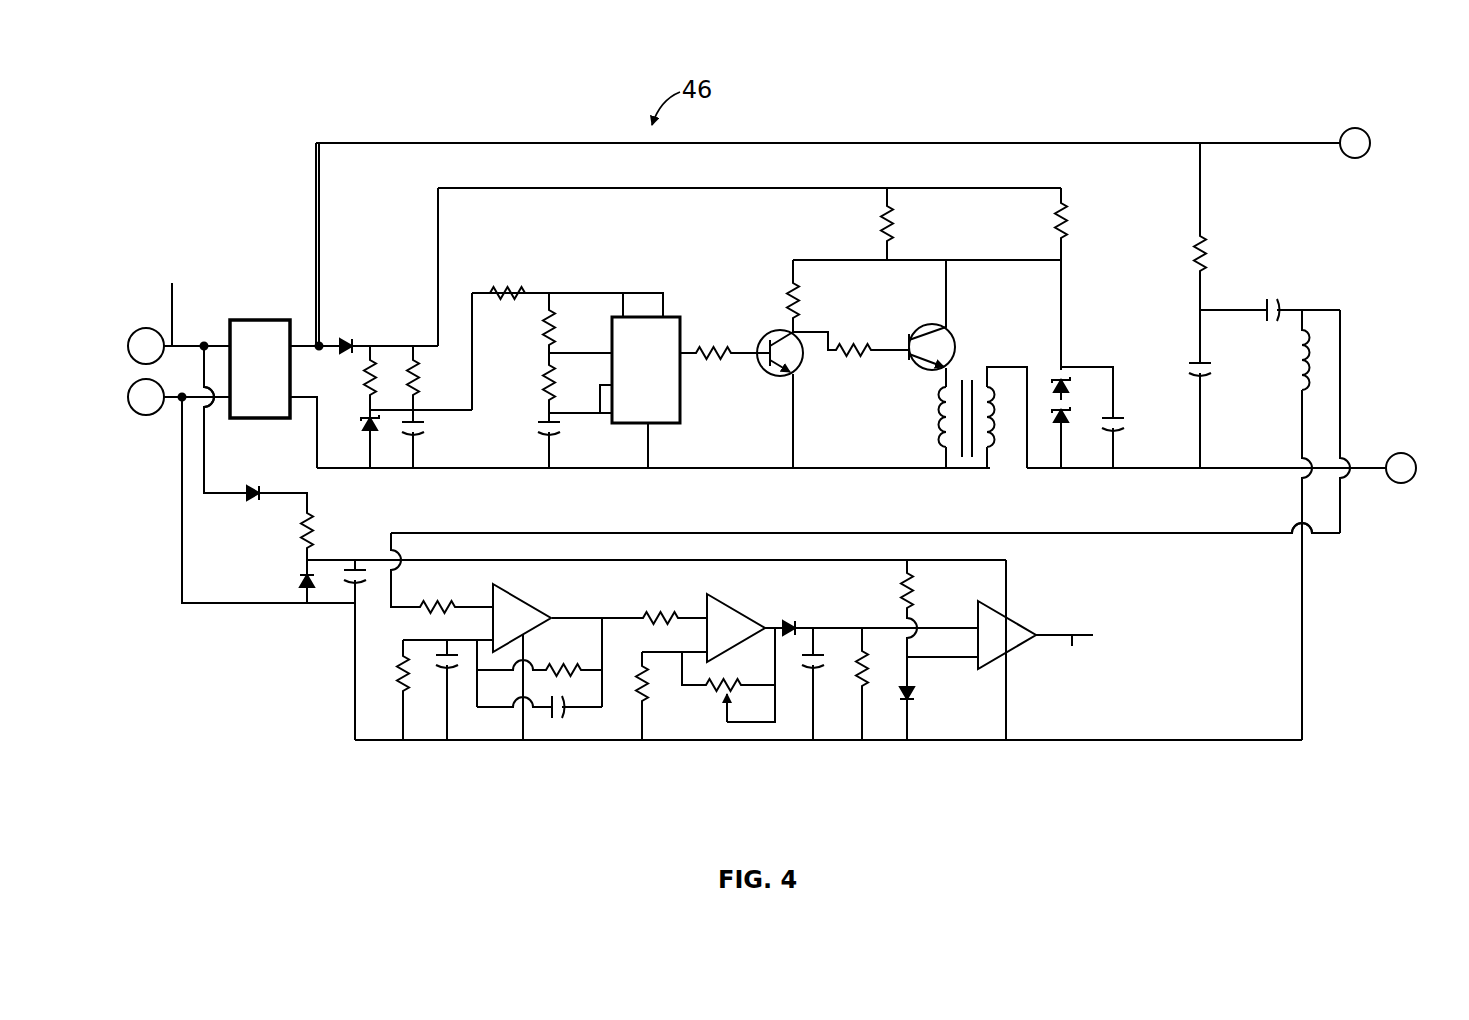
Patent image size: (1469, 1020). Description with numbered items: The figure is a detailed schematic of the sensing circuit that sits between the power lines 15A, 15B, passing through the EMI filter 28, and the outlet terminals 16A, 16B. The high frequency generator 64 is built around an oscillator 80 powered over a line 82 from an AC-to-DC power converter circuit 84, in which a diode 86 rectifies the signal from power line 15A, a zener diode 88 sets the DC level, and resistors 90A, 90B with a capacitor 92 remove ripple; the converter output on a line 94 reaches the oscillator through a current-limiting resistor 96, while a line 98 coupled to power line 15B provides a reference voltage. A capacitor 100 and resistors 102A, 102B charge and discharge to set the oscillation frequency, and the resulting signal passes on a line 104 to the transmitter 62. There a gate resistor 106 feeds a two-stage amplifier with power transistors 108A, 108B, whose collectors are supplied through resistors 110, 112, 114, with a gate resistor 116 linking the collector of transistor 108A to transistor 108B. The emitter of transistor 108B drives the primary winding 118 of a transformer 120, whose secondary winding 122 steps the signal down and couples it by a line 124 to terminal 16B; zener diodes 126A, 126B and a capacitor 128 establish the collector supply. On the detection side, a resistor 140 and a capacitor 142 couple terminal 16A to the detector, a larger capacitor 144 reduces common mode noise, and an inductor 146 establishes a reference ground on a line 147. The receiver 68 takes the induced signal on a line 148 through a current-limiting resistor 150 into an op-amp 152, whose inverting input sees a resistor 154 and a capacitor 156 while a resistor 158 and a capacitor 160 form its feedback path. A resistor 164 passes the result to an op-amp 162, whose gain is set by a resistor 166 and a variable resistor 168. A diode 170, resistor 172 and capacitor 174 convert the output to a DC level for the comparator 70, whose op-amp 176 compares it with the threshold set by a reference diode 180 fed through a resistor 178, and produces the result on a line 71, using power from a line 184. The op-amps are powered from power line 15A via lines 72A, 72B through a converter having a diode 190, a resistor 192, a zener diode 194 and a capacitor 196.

The power line 15A is at (162, 311).
The power line 15B is at (178, 401).
The terminal 16A is at (1368, 137).
The terminal 16B is at (1412, 460).
The EMI filter 28 is at (256, 318).
The transmitter 62 is at (1049, 184).
The high frequency generator 64 is at (540, 183).
The receiver circuit 68 is at (510, 745).
The comparator 70 is at (950, 744).
The line 71 is at (1072, 635).
The line 72A is at (204, 452).
The line 72B is at (182, 512).
The oscillator 80 is at (679, 316).
The line 82 is at (635, 292).
The AC-to-DC power converter circuit 84 is at (405, 338).
The diode 86 is at (348, 336).
The zener diode 88 is at (364, 427).
The resistor 90A is at (363, 375).
The resistor 90B is at (415, 385).
The capacitor 92 is at (418, 433).
The line 94 is at (472, 308).
The current-limiting resistor 96 is at (505, 285).
The line 98 is at (648, 453).
The capacitor 100 is at (548, 434).
The resistor 102A is at (547, 343).
The resistor 102B is at (547, 397).
The line 104 is at (686, 356).
The gate resistor 106 is at (708, 348).
The power transistor 108A is at (786, 376).
The power transistor 108B is at (946, 326).
The resistor 110 is at (796, 282).
The resistor 112 is at (895, 222).
The resistor 114 is at (1069, 226).
The gate resistor 116 is at (869, 343).
The primary winding 118 is at (945, 432).
The transformer 120 is at (982, 470).
The secondary winding 122 is at (990, 403).
The line 124 is at (1157, 468).
The zener diode 126A is at (1066, 380).
The zener diode 126B is at (1067, 424).
The capacitor 128 is at (1119, 418).
The resistor 140 is at (1211, 253).
The capacitor 142 is at (1278, 307).
The capacitor 144 is at (1203, 375).
The inductor 146 is at (1322, 367).
The line 147 is at (1302, 660).
The line 148 is at (722, 533).
The current-limiting resistor 150 is at (423, 609).
The op-amp 152 is at (518, 598).
The resistor 154 is at (402, 661).
The capacitor 156 is at (450, 677).
The resistor 158 is at (570, 680).
The capacitor 160 is at (550, 716).
The op-amp 162 is at (740, 612).
The current-limiting resistor 164 is at (660, 612).
The resistor 166 is at (648, 695).
The variable resistor 168 is at (712, 700).
The diode 170 is at (793, 621).
The resistor 172 is at (865, 682).
The capacitor 174 is at (818, 670).
The op-amp 176 is at (1020, 627).
The resistor 178 is at (915, 572).
The reference diode 180 is at (912, 693).
The line 184 is at (637, 557).
The diode 190 is at (253, 500).
The resistor 192 is at (312, 510).
The zener diode 194 is at (298, 578).
The capacitor 196 is at (350, 570).